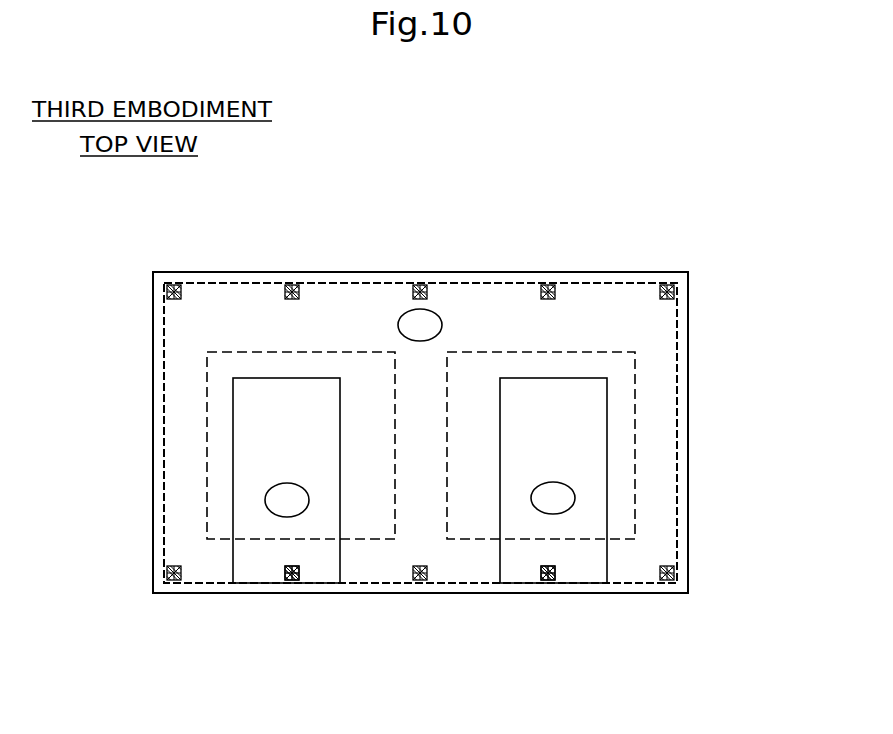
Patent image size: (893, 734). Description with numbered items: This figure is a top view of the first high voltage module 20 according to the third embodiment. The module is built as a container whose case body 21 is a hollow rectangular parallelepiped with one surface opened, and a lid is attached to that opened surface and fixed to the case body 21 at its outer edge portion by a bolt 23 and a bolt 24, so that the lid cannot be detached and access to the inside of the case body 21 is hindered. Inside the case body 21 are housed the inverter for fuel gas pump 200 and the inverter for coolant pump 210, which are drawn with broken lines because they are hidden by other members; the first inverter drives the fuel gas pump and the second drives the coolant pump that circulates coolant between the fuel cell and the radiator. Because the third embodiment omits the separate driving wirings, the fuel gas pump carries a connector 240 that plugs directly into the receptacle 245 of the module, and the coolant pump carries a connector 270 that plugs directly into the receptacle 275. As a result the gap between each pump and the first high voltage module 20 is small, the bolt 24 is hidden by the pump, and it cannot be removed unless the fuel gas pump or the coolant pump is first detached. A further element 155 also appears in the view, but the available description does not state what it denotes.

The first high voltage module 20 is at (707, 209).
The case body 21 is at (622, 270).
The bolt 23 is at (176, 285).
The bolt 24 is at (293, 581).
The opening 155 is at (430, 309).
The inverter for fuel gas pump 200 is at (635, 363).
The inverter for coolant pump 210 is at (207, 368).
The connector 240 is at (500, 546).
The receptacle 245 is at (553, 480).
The connector 270 is at (340, 548).
The receptacle 275 is at (292, 482).